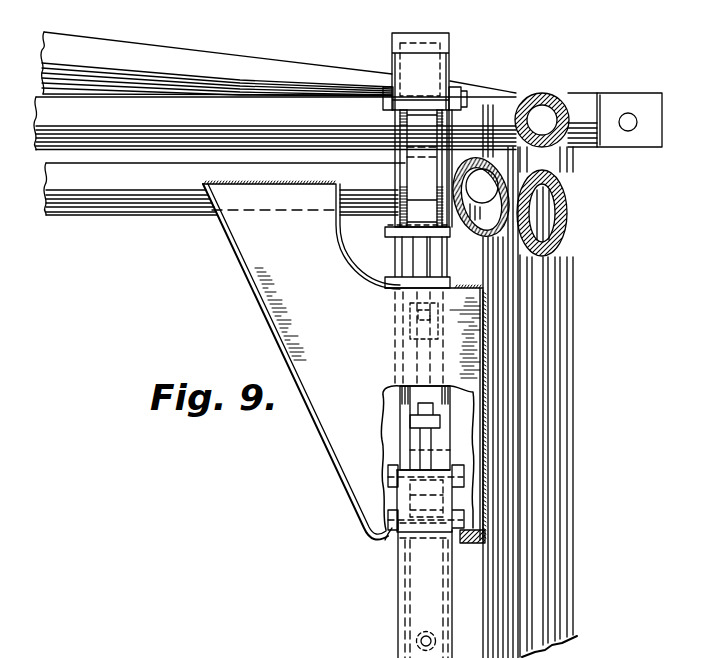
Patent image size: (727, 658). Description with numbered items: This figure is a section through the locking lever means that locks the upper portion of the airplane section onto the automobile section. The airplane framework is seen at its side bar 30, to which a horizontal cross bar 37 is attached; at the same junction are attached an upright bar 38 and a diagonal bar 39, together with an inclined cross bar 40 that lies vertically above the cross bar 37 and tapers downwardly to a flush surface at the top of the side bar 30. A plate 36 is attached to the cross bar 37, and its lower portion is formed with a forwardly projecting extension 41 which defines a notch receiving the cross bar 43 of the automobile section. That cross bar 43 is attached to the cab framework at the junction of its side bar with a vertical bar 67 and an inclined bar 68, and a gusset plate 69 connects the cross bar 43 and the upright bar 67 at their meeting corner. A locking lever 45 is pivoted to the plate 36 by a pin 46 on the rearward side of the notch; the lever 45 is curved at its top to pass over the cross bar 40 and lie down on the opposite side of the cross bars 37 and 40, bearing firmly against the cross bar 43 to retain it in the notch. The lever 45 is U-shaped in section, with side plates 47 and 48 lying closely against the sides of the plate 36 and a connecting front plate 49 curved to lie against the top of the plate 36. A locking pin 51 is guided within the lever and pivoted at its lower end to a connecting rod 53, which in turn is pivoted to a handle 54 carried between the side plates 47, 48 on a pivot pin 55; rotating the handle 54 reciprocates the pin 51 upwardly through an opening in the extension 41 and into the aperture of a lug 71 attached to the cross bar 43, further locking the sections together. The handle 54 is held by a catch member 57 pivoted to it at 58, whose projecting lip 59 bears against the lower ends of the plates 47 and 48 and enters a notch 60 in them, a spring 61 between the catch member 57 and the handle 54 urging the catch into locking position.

The side bar 30 is at (548, 101).
The plate 36 is at (416, 137).
The cross bar 37 is at (206, 145).
The upright bar 38 is at (572, 341).
The diagonal bar 39 is at (566, 186).
The inclined cross bar 40 is at (310, 68).
The forwardly projecting extension 41 is at (404, 232).
The cross bar 43 is at (180, 205).
The locking lever 45 is at (397, 40).
The pin 46 is at (467, 103).
The side plate 47 is at (470, 397).
The side plate 48 is at (399, 406).
The front plate 49 is at (396, 386).
The locking pin 51 is at (416, 262).
The connecting rod 53 is at (410, 382).
The handle 54 is at (420, 455).
The pivot pin 55 is at (396, 481).
The catch member 57 is at (400, 576).
The pivot 58 is at (389, 540).
The projecting lip 59 is at (397, 498).
The notch 60 is at (396, 458).
The spring 61 is at (410, 628).
The vertical bar 67 is at (503, 357).
The inclined bar 68 is at (484, 236).
The gusset plate 69 is at (272, 285).
The lug 71 is at (396, 198).